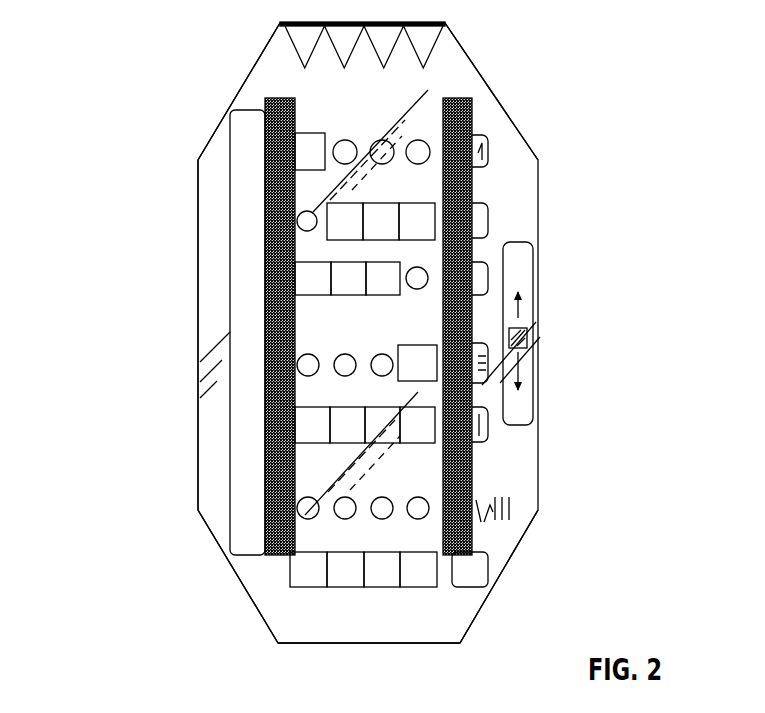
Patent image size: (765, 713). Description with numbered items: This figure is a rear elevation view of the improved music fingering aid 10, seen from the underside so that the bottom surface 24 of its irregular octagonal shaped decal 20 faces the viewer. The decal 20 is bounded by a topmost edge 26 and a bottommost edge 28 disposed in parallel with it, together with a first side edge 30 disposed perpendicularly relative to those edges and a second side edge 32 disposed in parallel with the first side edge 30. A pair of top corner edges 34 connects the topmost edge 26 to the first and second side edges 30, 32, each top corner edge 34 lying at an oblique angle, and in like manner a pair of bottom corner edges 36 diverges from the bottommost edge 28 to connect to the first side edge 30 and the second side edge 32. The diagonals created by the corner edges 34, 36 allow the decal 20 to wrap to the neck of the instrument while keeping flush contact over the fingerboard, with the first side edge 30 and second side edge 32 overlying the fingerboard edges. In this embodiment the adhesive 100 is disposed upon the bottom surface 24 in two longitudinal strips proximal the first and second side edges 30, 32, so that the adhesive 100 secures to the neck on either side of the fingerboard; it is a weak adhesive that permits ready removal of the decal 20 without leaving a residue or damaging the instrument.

The music fingering aid 10 is at (102, 70).
The decal 20 is at (170, 256).
The bottom surface 24 is at (354, 333).
The topmost edge 26 is at (320, 22).
The bottommost edge 28 is at (425, 643).
The first side edge 30 is at (540, 240).
The second side edge 32 is at (198, 378).
The top corner edges 34 is at (257, 62).
The bottom corner edges 36 is at (250, 593).
The adhesive 100 is at (270, 100).